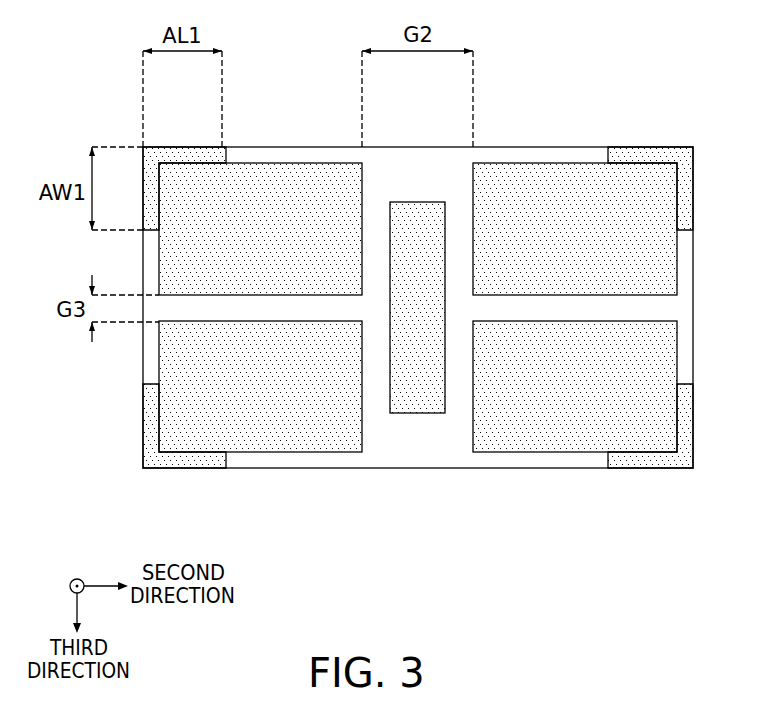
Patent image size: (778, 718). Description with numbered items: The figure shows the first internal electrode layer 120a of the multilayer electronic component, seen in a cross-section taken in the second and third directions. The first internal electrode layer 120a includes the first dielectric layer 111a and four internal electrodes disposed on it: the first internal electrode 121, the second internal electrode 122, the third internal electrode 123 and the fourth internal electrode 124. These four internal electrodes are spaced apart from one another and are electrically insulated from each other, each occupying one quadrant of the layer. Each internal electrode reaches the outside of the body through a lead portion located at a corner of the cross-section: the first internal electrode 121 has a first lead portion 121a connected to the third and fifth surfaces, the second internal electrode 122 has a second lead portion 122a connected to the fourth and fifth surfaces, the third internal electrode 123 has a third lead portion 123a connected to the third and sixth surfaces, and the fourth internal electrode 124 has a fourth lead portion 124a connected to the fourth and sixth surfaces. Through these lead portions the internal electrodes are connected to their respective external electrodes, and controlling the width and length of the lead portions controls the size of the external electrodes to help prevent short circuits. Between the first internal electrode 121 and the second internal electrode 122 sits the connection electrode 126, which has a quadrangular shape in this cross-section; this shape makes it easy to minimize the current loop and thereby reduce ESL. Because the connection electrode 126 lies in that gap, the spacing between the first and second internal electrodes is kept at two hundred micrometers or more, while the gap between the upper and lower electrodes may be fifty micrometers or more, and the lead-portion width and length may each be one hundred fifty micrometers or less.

The first internal electrode layer 120a is at (496, 490).
The first internal electrode 121 is at (290, 173).
The first lead portion 121a is at (190, 147).
The second internal electrode 122 is at (550, 177).
The second lead portion 122a is at (648, 160).
The third internal electrode 123 is at (288, 458).
The third lead portion 123a is at (190, 465).
The fourth internal electrode 124 is at (548, 440).
The fourth lead portion 124a is at (648, 460).
The connection electrode 126 is at (425, 403).
The first dielectric layer 111a is at (390, 438).